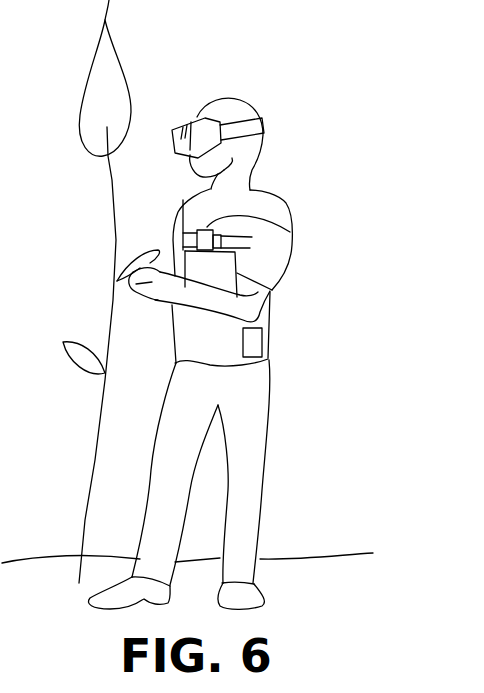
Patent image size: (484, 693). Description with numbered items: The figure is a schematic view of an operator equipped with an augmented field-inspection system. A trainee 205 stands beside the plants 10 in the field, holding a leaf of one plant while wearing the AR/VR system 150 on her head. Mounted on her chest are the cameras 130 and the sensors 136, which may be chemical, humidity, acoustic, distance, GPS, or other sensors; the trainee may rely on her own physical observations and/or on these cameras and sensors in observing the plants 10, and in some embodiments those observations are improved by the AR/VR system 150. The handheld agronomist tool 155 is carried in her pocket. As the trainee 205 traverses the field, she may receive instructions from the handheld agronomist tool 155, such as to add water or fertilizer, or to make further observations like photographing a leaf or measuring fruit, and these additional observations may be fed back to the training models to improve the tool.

The plants 10 is at (112, 200).
The AR/VR system 150 is at (176, 118).
The cameras 130 is at (289, 255).
The sensors 136 is at (209, 240).
The trainee 205 is at (269, 303).
The handheld agronomist tool 155 is at (262, 338).